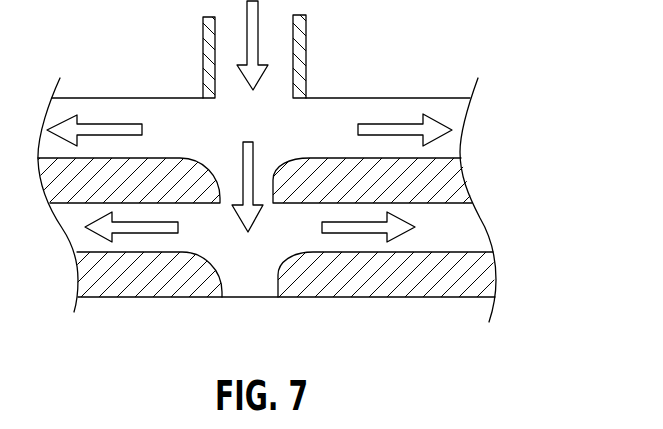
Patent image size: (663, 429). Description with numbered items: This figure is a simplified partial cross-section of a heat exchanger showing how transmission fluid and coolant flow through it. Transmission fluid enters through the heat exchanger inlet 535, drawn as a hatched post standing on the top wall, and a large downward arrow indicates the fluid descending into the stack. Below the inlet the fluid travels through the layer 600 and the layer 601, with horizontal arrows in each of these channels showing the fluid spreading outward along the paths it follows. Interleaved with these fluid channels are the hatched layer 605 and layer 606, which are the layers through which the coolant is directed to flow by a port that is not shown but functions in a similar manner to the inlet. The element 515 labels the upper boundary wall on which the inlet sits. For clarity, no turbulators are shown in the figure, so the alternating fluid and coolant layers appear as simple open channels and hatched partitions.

The membrane layer 515 is at (117, 98).
The heat exchanger inlet 535 is at (307, 44).
The layer 600 is at (383, 108).
The layer 605 is at (456, 179).
The layer 601 is at (477, 236).
The layer 606 is at (488, 283).